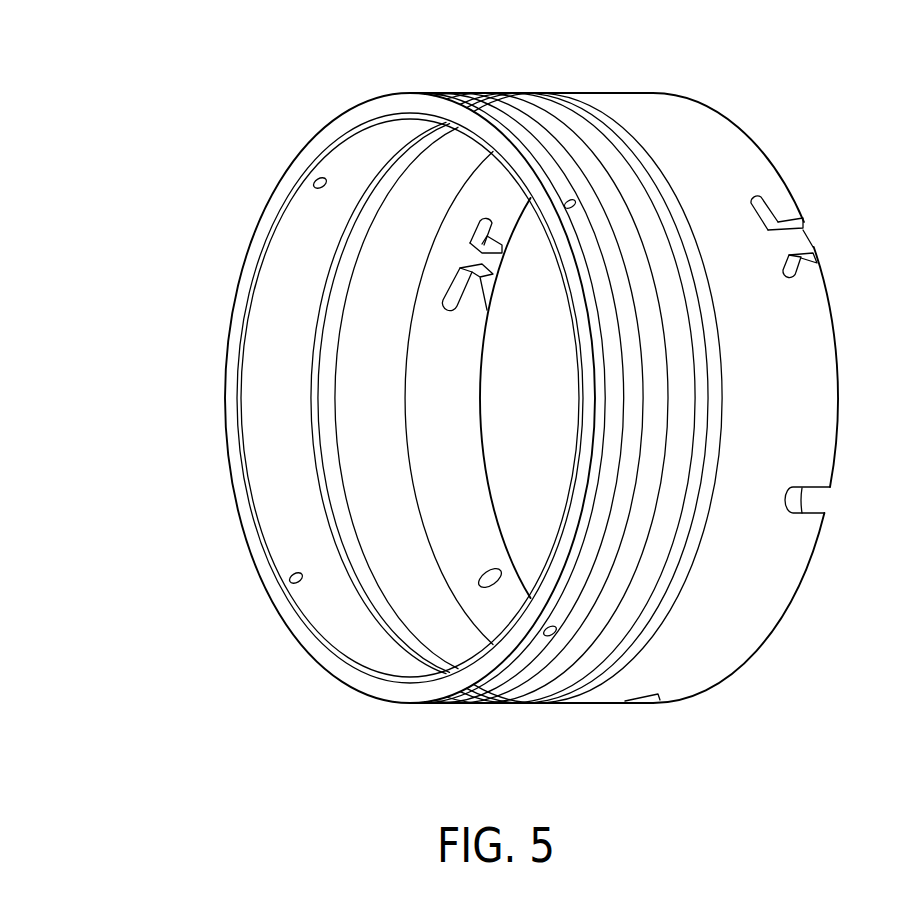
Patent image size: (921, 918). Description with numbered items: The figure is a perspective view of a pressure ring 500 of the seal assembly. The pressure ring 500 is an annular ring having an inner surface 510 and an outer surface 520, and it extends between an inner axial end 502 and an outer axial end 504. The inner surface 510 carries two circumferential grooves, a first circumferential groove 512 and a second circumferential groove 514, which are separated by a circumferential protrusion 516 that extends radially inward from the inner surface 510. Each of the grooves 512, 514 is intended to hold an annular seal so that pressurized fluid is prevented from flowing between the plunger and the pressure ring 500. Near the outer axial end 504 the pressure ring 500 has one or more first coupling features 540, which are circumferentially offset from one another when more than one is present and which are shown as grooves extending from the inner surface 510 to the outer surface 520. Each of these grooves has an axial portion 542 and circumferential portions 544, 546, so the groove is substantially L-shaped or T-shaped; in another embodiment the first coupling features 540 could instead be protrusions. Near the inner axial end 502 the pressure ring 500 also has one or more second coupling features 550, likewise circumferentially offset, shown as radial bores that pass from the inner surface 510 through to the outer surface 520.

The pressure ring 500 is at (183, 711).
The inner axial end 502 is at (370, 683).
The outer axial end 504 is at (837, 393).
The inner surface 510 is at (263, 283).
The first circumferential groove 512 is at (445, 425).
The second circumferential groove 514 is at (260, 425).
The circumferential protrusion 516 is at (387, 508).
The outer surface 520 is at (663, 105).
The first coupling feature 540 is at (832, 217).
The axial portion 542 is at (803, 238).
The circumferential portion 544 is at (757, 207).
The circumferential portion 546 is at (787, 270).
The second coupling feature 550 is at (287, 572).